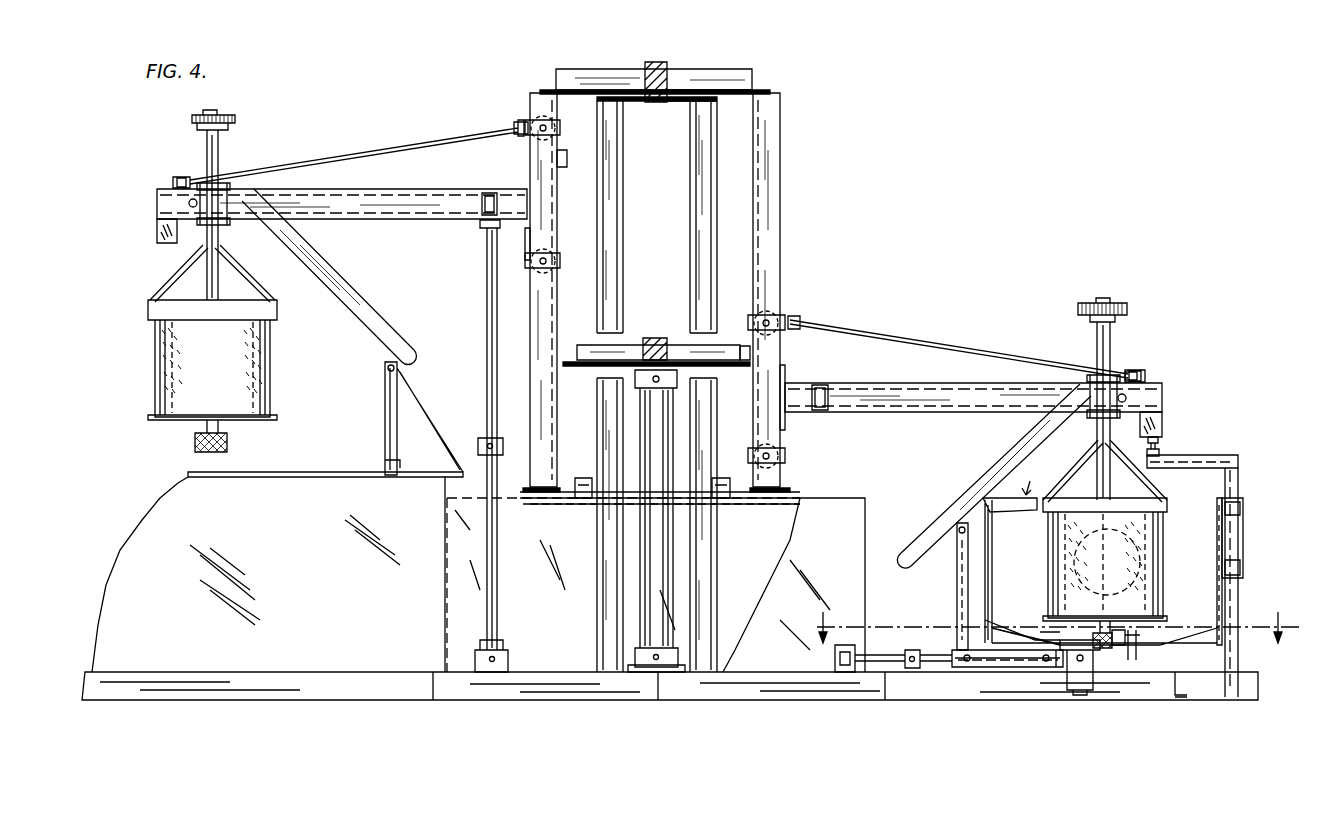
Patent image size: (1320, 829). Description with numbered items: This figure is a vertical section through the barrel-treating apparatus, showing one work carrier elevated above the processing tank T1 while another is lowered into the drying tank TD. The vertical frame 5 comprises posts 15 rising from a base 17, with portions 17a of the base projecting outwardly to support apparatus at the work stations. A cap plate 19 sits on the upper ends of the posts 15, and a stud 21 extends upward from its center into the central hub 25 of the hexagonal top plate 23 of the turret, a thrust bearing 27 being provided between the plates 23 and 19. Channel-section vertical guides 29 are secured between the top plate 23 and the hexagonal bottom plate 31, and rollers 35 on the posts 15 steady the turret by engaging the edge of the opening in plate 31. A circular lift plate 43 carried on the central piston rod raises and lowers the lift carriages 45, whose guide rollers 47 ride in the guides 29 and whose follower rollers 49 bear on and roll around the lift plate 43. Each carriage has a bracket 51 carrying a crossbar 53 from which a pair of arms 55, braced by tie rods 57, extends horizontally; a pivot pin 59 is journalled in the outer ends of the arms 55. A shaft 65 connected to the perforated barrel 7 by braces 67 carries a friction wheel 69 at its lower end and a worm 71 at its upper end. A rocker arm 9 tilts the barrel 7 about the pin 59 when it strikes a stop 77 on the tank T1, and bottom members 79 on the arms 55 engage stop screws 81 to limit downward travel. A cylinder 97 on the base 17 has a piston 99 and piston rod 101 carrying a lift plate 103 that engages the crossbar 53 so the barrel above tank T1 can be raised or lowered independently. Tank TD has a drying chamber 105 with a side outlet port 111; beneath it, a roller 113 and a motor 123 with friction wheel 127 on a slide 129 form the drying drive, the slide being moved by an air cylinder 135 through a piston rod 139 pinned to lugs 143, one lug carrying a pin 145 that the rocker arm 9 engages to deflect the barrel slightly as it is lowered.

The vertical frame 5 is at (1057, 620).
The perforated barrel 7 is at (273, 360).
The rocker arm 9 is at (345, 296).
The post 15 is at (675, 197).
The base 17 is at (683, 700).
The base portion 17a is at (205, 688).
The cap plate 19 is at (632, 103).
The stud 21 is at (647, 62).
The hexagonal top plate 23 is at (770, 90).
The central hub 25 is at (668, 85).
The thrust bearing 27 is at (676, 103).
The vertical guide 29 is at (530, 100).
The hexagonal bottom plate 31 is at (560, 500).
The roller 35 is at (584, 478).
The circular lift plate 43 is at (585, 366).
The lift carriage 45 is at (555, 270).
The guide roller 47 is at (530, 135).
The follower roller 49 is at (562, 167).
The bracket 51 is at (525, 235).
The crossbar 53 is at (490, 193).
The arm 55 is at (382, 210).
The tie rod 57 is at (452, 143).
The horizontal pivot pin 59 is at (189, 203).
The shaft 65 is at (207, 285).
The brace 67 is at (177, 275).
The friction wheel 69 is at (227, 442).
The worm 71 is at (230, 113).
The stop 77 is at (385, 378).
The bottom member 79 is at (157, 232).
The stop screw 81 is at (1158, 445).
The cylinder 97 is at (497, 585).
The piston 99 is at (478, 448).
The piston rod 101 is at (487, 335).
The lift plate 103 is at (480, 226).
The drying chamber 105 is at (1217, 600).
The outlet port 111 is at (1243, 545).
The roller 113 is at (1125, 638).
The motor 123 is at (1085, 690).
The friction wheel 127 is at (1035, 625).
The slide 129 is at (1010, 667).
The air cylinder 135 is at (860, 627).
The piston rod 139 is at (940, 665).
The lug 143 is at (957, 580).
The pin 145 is at (958, 533).
The tank T1 is at (268, 574).
The drying tank TD is at (1100, 553).